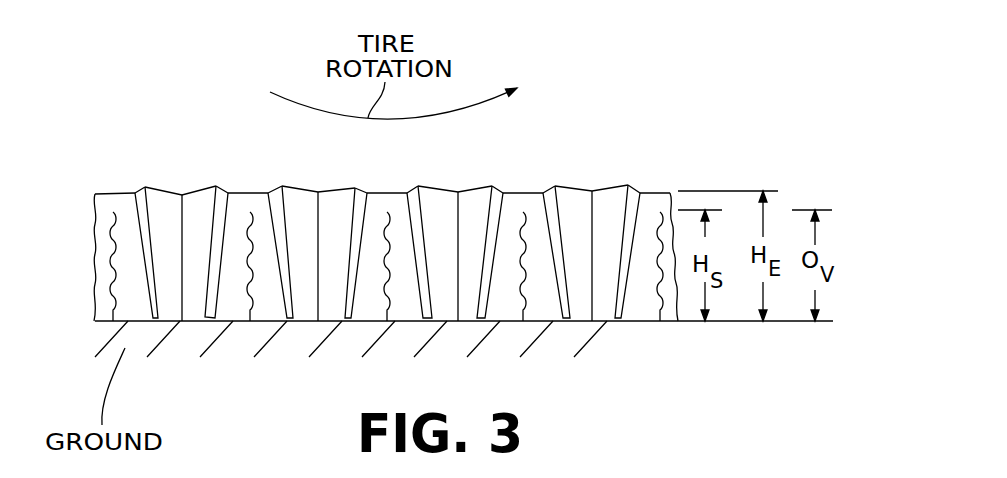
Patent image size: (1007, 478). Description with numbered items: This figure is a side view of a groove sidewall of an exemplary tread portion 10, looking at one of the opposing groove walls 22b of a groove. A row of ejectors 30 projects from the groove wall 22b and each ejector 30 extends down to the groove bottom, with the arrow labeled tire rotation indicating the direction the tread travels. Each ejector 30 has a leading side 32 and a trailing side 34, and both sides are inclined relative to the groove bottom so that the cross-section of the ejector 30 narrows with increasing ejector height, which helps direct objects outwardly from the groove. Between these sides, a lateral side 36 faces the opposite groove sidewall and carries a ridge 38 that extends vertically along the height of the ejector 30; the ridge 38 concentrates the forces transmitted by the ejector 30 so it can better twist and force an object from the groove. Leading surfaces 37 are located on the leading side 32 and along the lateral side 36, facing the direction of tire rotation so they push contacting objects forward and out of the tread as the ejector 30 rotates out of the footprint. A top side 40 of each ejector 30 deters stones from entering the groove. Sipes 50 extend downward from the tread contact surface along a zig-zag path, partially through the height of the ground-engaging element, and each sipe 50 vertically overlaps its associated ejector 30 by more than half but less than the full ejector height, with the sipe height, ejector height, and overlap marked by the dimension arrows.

The tread portion 10 is at (592, 141).
The groove wall 22b is at (638, 308).
The ejector 30 is at (197, 190).
The leading side 32 is at (352, 284).
The trailing side 34 is at (284, 291).
The lateral side 36 is at (158, 192).
The leading surface 37 is at (574, 190).
The ridge 38 is at (352, 194).
The top side 40 is at (200, 322).
The sipe 50 is at (523, 320).